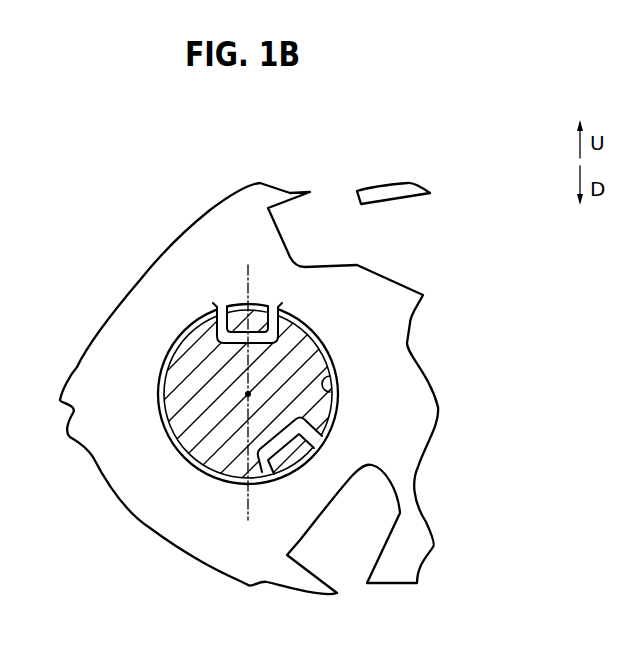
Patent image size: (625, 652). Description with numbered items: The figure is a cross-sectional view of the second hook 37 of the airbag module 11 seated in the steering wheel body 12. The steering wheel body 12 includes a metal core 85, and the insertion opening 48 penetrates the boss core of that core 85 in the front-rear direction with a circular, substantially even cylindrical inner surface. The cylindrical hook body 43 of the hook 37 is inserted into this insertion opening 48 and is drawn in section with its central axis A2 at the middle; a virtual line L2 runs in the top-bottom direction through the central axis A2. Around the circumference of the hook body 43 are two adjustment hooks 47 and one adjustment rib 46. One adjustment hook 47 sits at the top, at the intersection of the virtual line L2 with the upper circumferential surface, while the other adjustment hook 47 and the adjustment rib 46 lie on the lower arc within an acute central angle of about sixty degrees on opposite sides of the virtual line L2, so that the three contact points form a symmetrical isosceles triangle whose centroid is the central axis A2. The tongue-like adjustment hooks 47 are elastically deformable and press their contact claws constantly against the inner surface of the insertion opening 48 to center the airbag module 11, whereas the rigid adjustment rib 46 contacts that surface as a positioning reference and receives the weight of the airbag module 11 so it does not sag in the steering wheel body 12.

The steering wheel body 12 is at (228, 376).
The core 85 is at (118, 303).
The airbag module 11 is at (290, 428).
The hook body 43 is at (175, 443).
The adjustment hook 47 is at (263, 303).
The insertion opening 48 is at (326, 375).
The hook 37 is at (321, 418).
The virtual line L2 is at (250, 310).
The central axis A2 is at (246, 395).
The adjustment rib 46 is at (196, 463).